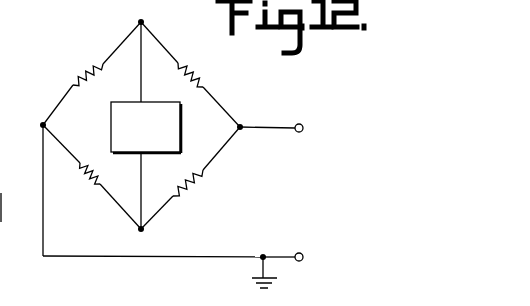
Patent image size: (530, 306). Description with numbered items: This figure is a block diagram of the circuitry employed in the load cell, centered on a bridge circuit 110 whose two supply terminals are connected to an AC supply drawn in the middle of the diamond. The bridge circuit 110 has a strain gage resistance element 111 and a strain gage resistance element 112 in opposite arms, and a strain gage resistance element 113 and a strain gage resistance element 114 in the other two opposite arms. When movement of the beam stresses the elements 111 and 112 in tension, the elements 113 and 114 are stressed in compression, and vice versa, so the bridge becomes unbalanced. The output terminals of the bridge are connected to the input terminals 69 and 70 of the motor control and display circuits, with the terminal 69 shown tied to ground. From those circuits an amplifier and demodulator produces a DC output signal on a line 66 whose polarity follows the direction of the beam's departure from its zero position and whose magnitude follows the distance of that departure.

The bridge circuit 110 is at (90, 134).
The strain gage resistance element 111 is at (182, 63).
The strain gage resistance element 112 is at (98, 187).
The strain gage resistance element 113 is at (204, 173).
The strain gage resistance element 114 is at (76, 81).
The input terminal 70 is at (301, 124).
The input terminal 69 is at (303, 253).
The line 66 is at (0, 283).